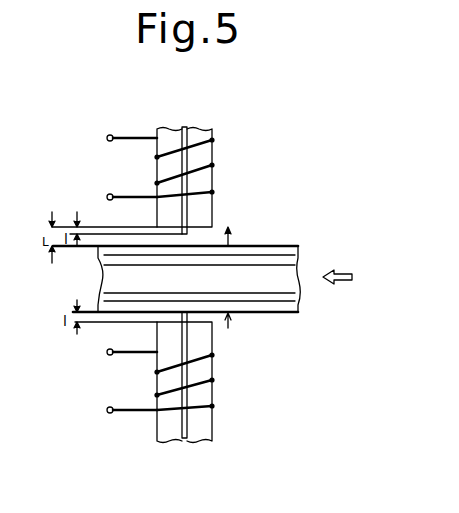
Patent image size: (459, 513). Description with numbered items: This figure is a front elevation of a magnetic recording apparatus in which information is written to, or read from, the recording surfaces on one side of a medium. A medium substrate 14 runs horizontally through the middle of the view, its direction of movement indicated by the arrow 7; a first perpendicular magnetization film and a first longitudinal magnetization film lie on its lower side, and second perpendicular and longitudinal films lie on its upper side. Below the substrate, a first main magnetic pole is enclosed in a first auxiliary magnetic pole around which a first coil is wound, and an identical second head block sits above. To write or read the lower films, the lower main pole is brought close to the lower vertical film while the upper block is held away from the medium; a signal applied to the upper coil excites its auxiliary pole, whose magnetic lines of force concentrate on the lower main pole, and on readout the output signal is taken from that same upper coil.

The arrow 7 is at (347, 277).
The medium substrate 14 is at (287, 280).